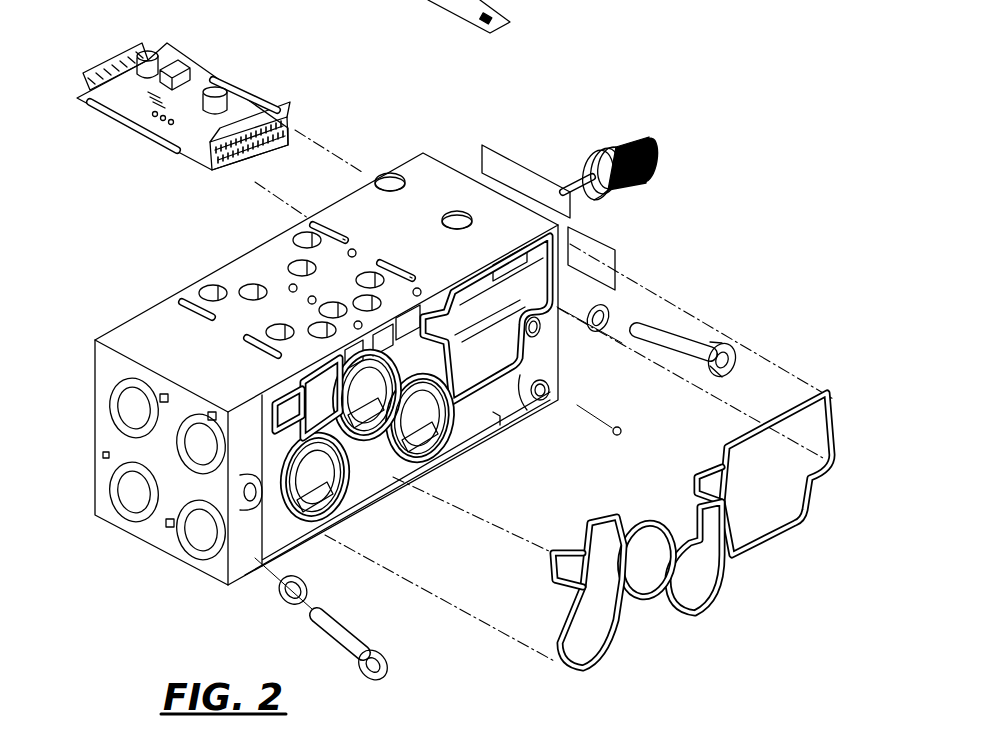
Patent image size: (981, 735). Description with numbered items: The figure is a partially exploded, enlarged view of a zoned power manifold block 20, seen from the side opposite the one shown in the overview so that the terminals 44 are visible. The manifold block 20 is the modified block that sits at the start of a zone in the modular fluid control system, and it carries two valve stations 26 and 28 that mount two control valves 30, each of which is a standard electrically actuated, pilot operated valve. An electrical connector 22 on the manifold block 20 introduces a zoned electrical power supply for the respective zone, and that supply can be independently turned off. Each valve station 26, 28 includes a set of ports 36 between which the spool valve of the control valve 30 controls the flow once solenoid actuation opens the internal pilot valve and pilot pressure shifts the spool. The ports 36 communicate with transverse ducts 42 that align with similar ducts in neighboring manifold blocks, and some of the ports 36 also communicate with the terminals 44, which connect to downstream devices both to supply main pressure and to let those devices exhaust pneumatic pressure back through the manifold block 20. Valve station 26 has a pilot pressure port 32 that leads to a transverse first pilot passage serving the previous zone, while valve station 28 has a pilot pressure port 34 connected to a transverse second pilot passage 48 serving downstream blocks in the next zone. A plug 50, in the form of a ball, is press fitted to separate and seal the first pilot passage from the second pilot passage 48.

The manifold block 20 is at (108, 366).
The electrical connector 22 is at (603, 148).
The valve station 26 is at (337, 226).
The valve station 28 is at (401, 259).
The control valve 30 is at (230, 328).
The pilot pressure port 32 is at (346, 238).
The pilot pressure port 34 is at (386, 262).
The ports 36 is at (333, 305).
The transverse ducts 42 is at (423, 432).
The terminals 44 is at (197, 532).
The second pilot passage 48 is at (437, 323).
The plug 50 is at (623, 430).